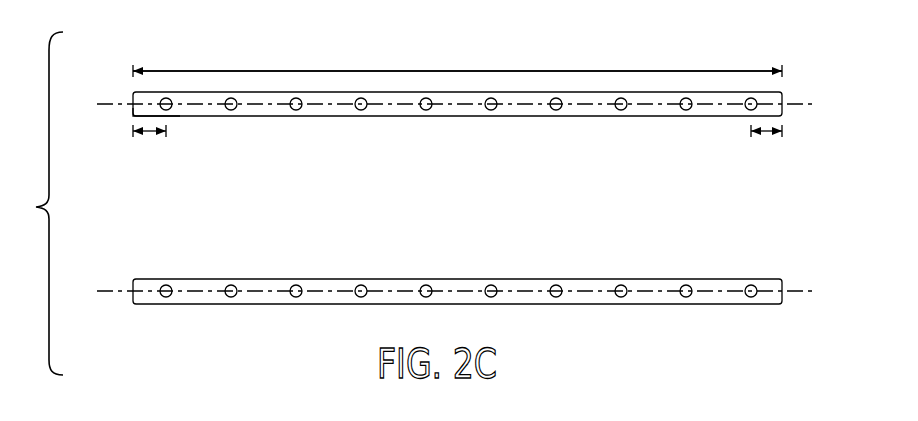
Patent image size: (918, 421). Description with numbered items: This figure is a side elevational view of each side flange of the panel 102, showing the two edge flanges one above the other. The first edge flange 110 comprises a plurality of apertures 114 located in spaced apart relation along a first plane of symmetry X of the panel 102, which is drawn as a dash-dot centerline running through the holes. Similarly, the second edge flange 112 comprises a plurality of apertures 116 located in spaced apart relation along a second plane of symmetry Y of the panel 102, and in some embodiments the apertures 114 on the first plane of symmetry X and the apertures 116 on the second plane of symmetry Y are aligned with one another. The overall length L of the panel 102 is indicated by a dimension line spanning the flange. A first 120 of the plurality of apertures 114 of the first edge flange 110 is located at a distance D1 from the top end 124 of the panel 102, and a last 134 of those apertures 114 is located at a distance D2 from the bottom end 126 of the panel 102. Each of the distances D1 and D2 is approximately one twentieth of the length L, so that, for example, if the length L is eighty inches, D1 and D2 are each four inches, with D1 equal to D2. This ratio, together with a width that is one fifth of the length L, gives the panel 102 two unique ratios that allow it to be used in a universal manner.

The panel 102 is at (458, 188).
The first edge flange 110 is at (133, 98).
The second edge flange 112 is at (133, 285).
The plurality of apertures 114 is at (218, 113).
The plurality of apertures 116 is at (218, 306).
The first of the plurality of apertures 120 is at (167, 98).
The top end 124 is at (133, 109).
The bottom end 126 is at (783, 97).
The last of the plurality of apertures 134 is at (750, 98).
The length L is at (461, 70).
The distance D1 is at (148, 134).
The distance D2 is at (763, 134).
The first plane of symmetry X is at (795, 110).
The second plane of symmetry Y is at (795, 297).